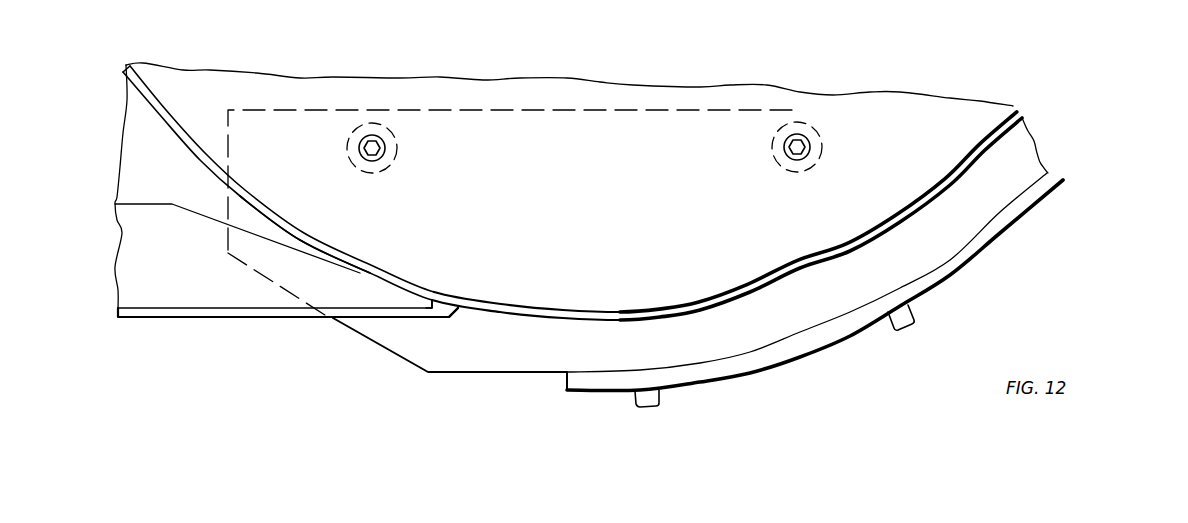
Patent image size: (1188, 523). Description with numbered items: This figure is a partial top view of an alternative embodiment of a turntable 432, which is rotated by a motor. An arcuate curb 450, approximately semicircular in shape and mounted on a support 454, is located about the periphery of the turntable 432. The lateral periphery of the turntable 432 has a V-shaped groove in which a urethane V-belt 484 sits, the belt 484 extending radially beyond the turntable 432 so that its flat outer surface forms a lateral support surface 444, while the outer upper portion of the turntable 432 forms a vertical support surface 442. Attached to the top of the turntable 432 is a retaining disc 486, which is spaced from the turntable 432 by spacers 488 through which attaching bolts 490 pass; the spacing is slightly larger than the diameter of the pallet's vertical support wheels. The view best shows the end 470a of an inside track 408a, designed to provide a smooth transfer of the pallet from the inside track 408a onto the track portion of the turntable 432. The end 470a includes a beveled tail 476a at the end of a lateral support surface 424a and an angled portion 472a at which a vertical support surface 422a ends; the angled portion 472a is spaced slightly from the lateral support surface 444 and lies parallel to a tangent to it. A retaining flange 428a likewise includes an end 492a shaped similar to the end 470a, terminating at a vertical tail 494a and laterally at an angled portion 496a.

The inside track 408a is at (280, 351).
The vertical support surface 422a is at (207, 311).
The lateral support surface 424a is at (295, 319).
The retaining flange 428a is at (186, 275).
The turntable 432 is at (918, 92).
The vertical support surface 442 is at (1006, 136).
The lateral support surface 444 is at (963, 170).
The arcuate curb 450 is at (793, 358).
The support 454 is at (800, 331).
The end 470a is at (412, 343).
The angled portion 472a is at (457, 302).
The beveled tail 476a is at (453, 313).
The urethane V-belt 484 is at (920, 217).
The retaining disc 486 is at (612, 194).
The spacers 488 is at (392, 152).
The attaching bolts 490 is at (349, 148).
The end 492a is at (343, 287).
The vertical tail 494a is at (428, 301).
The angled portion 496a is at (303, 253).